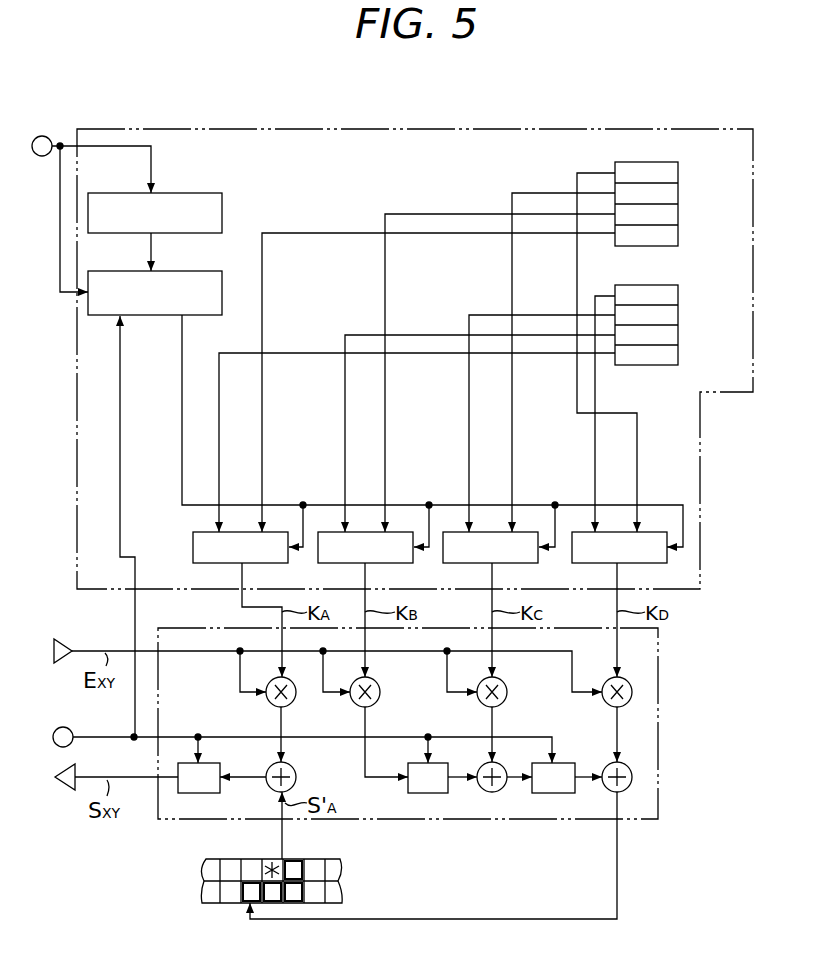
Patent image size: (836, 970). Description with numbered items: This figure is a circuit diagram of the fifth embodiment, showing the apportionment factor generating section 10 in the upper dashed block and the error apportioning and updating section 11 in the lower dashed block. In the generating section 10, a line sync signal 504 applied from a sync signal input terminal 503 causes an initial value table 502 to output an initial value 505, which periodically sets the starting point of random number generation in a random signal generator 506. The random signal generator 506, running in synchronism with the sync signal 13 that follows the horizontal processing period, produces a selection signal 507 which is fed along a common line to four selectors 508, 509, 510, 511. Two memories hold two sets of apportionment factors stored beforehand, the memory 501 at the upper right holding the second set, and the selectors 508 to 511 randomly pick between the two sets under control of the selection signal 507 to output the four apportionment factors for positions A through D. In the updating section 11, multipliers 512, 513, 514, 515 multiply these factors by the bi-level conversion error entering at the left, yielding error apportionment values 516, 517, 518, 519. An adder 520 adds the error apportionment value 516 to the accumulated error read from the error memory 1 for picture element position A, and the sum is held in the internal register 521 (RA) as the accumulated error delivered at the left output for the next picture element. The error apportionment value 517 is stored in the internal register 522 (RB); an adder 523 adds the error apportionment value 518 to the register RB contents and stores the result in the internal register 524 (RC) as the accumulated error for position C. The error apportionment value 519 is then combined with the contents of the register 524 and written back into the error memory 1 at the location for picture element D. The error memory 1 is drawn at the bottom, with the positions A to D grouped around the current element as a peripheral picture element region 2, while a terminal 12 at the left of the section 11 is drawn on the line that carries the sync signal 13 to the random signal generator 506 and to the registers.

The apportionment factor generating section 10 is at (317, 128).
The error apportioning and updating section 11 is at (165, 822).
The input terminal 12 is at (63, 727).
The sync signal 13 is at (135, 613).
The error memory 1 is at (335, 858).
The peripheral picture element region 2 is at (340, 887).
The memory 501 is at (630, 162).
The initial value table 502 is at (222, 203).
The sync signal input terminal 503 is at (48, 136).
The line sync signal 504 is at (151, 157).
The initial value 505 is at (151, 250).
The random signal generator 506 is at (207, 315).
The selection signal 507 is at (280, 505).
The selector 508 is at (193, 541).
The selector 509 is at (318, 563).
The selector 510 is at (443, 563).
The selector 511 is at (572, 563).
The multiplier 512 is at (268, 702).
The multiplier 513 is at (377, 682).
The multiplier 514 is at (504, 682).
The multiplier 515 is at (607, 681).
The error apportionment value 516 is at (283, 718).
The error apportionment value 517 is at (367, 722).
The error apportionment value 518 is at (493, 722).
The error apportionment value 519 is at (617, 738).
The adder 520 is at (293, 767).
The internal register (RA) 521 is at (218, 793).
The internal register (RB) 522 is at (413, 793).
The adder 523 is at (480, 790).
The internal register (RC) 524 is at (548, 793).